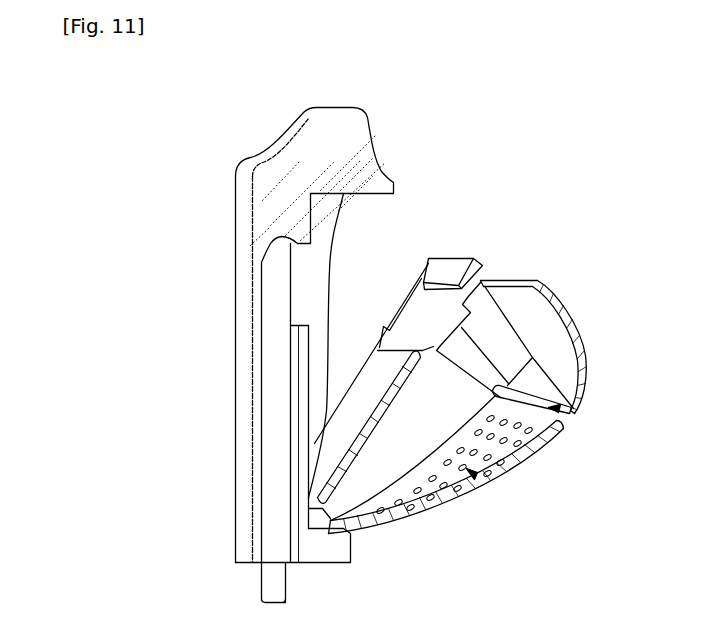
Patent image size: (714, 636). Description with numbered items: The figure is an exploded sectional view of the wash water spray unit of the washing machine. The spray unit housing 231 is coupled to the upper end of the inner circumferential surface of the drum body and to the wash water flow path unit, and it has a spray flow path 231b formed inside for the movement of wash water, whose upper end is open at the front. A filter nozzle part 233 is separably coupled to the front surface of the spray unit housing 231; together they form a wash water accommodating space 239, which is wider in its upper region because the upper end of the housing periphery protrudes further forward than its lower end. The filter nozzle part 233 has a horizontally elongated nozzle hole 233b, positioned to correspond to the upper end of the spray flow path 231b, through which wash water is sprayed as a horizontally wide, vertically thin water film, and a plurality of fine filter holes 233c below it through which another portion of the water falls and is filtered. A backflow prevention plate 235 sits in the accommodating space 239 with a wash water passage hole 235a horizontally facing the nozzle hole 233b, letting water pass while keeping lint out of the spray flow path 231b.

The spray unit housing 231 is at (262, 168).
The spray flow path 231b is at (276, 413).
The wash water accommodating space 239 is at (342, 313).
The filter nozzle part 233 is at (567, 323).
The nozzle hole 233b is at (557, 410).
The filter holes 233c is at (476, 476).
The backflow prevention plate 235 is at (456, 262).
The wash water passage hole 235a is at (428, 264).